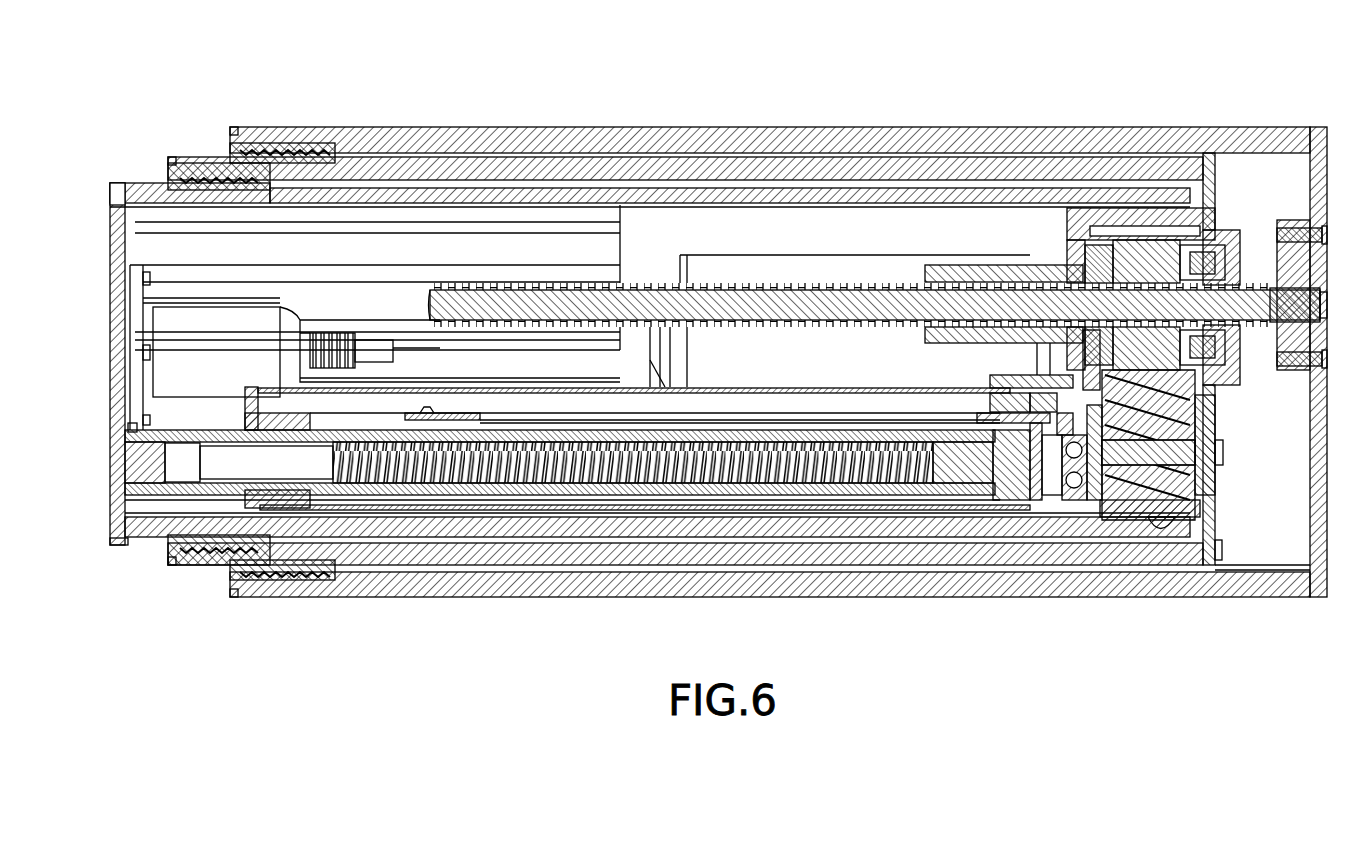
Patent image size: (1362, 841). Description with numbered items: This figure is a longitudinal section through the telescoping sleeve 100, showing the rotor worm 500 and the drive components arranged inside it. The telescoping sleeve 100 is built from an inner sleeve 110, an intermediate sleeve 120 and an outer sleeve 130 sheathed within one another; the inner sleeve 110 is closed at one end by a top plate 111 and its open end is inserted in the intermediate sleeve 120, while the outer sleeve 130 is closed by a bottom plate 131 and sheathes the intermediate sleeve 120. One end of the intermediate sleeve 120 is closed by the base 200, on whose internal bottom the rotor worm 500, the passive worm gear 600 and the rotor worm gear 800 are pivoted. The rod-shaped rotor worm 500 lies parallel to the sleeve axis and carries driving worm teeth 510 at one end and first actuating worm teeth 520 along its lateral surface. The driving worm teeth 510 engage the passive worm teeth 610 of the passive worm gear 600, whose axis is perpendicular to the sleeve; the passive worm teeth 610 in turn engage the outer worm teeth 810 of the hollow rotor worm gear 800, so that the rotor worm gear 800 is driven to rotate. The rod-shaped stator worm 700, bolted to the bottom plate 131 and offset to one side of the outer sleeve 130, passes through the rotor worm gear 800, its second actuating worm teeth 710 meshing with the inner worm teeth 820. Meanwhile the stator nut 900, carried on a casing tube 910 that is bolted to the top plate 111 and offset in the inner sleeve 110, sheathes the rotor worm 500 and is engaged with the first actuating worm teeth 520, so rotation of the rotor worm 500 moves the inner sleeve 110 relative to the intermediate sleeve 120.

The telescoping sleeve 100 is at (452, 125).
The inner sleeve 110 is at (150, 190).
The top plate 111 is at (112, 247).
The intermediate sleeve 120 is at (205, 172).
The outer sleeve 130 is at (345, 140).
The bottom plate 131 is at (1320, 165).
The base 200 is at (1215, 190).
The rotor worm 500 is at (874, 486).
The driving worm teeth 510 is at (1152, 522).
The first actuating worm teeth 520 is at (855, 490).
The passive worm gear 600 is at (1197, 406).
The passive worm teeth 610 is at (1217, 432).
The stator worm 700 is at (726, 282).
The second actuating worm teeth 710 is at (690, 283).
The rotor worm gear 800 is at (1161, 238).
The outer worm teeth 810 is at (1128, 245).
The inner worm teeth 820 is at (1095, 250).
The stator nut 900 is at (1015, 492).
The casing tube 910 is at (225, 490).